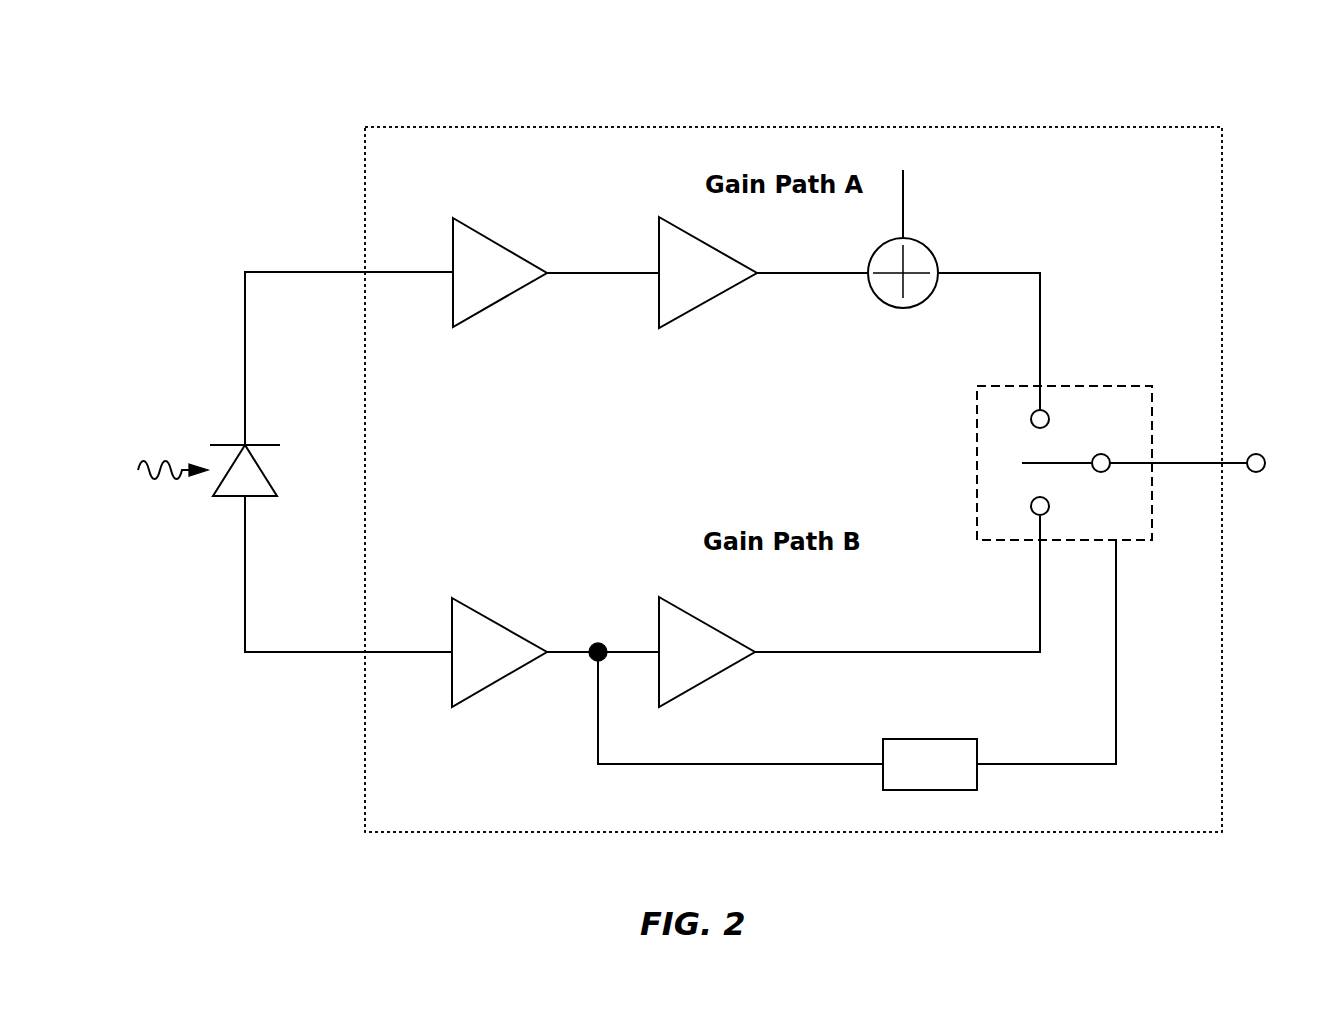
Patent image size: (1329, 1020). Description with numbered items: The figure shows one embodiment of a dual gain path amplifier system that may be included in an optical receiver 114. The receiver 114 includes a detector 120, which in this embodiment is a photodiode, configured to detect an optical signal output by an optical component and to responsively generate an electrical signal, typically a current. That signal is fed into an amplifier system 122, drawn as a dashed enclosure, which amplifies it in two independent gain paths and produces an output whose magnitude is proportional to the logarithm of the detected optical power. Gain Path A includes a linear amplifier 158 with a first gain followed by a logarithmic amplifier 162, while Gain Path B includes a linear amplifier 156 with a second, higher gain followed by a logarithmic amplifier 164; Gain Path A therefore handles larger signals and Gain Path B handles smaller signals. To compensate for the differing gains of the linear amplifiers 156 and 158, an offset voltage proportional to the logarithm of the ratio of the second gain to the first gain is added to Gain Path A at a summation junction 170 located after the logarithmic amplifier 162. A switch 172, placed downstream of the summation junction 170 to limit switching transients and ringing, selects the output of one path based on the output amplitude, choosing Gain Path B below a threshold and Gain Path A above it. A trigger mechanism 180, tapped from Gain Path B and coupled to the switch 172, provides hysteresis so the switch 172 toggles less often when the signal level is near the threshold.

The receiver 114 is at (1126, 83).
The amplifier system 122 is at (440, 832).
The detector 120 is at (260, 497).
The linear amplifier 158 is at (485, 310).
The logarithmic amplifier 162 is at (677, 318).
The summation junction 170 is at (927, 246).
The switch 172 is at (1110, 386).
The linear amplifier 156 is at (495, 683).
The logarithmic amplifier 164 is at (685, 610).
The trigger mechanism 180 is at (949, 739).